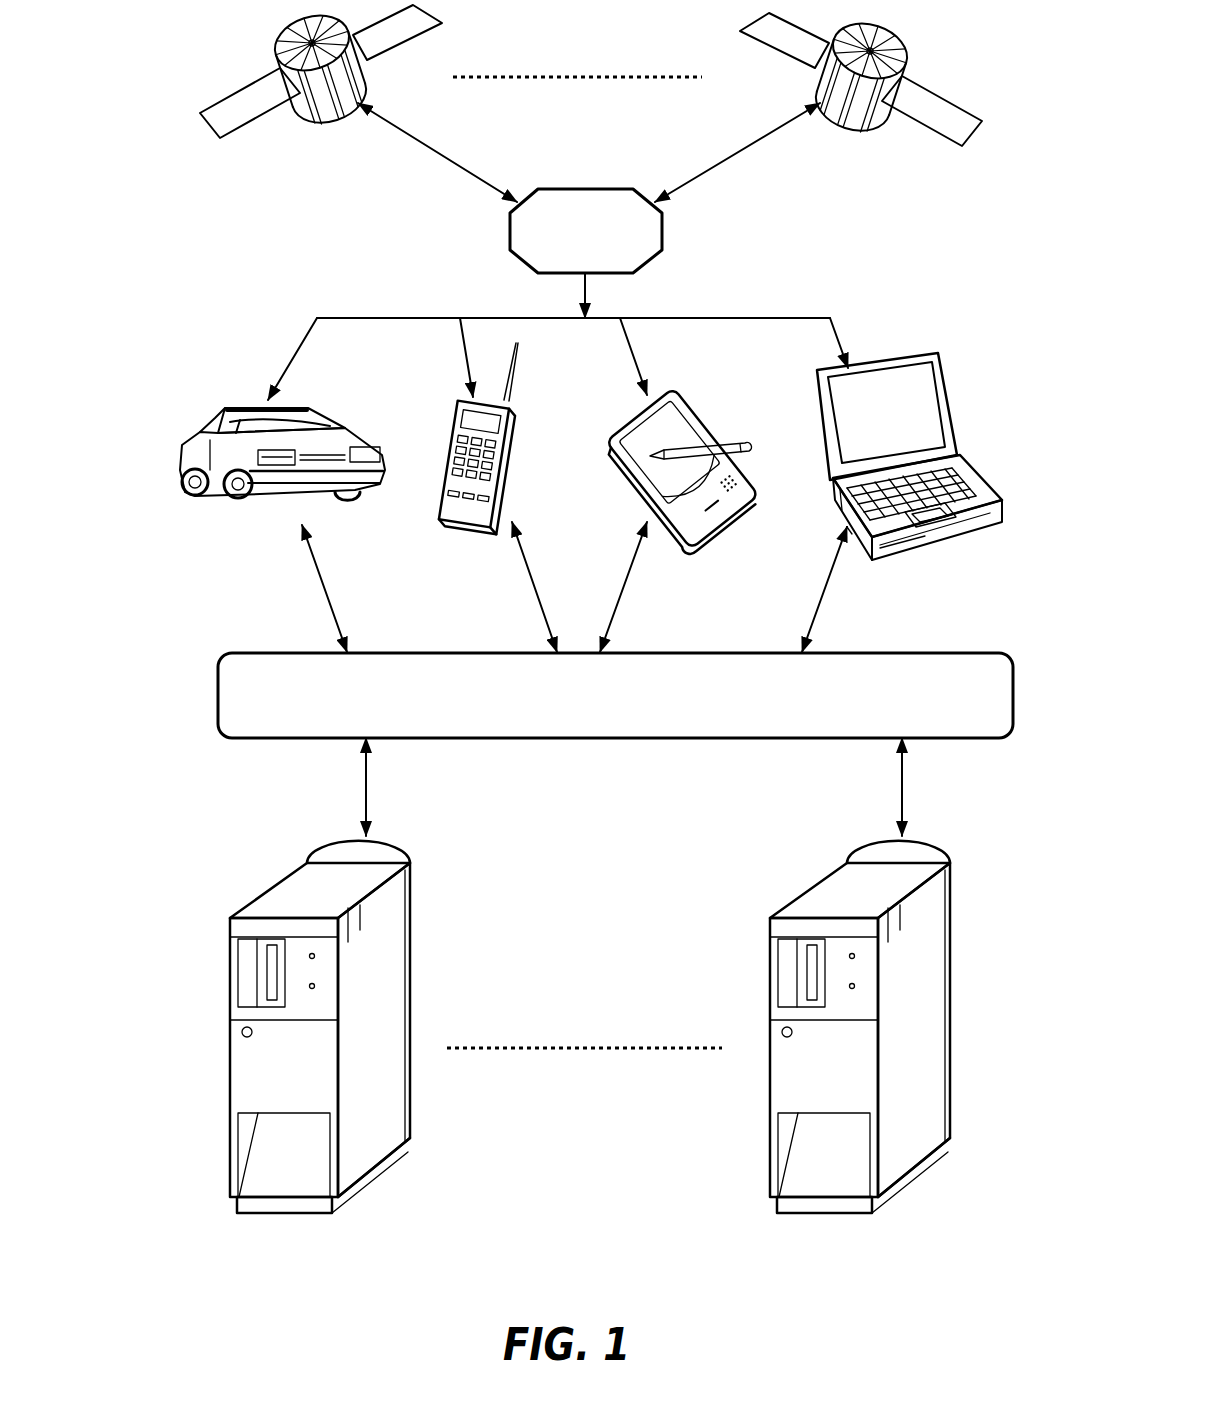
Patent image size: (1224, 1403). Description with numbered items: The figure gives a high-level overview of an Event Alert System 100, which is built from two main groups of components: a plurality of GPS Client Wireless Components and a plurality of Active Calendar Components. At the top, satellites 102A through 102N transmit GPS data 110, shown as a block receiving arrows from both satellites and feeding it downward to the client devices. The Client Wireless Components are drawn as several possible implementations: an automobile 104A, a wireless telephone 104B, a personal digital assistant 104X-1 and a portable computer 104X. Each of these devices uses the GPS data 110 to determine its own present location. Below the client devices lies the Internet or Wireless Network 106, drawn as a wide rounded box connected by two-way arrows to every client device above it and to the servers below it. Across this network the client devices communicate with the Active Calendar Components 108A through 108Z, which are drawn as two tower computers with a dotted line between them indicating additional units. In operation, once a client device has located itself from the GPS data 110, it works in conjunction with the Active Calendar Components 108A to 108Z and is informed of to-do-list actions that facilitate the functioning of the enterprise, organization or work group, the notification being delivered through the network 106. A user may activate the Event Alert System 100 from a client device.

The Event Alert System 100 is at (278, 262).
The satellite 102A is at (335, 112).
The satellite 102N is at (843, 117).
The GPS data 110 is at (598, 190).
The automobile 104A is at (278, 510).
The wireless telephone 104B is at (467, 531).
The personal digital assistant 104X-1 is at (707, 542).
The portable computer 104X is at (928, 538).
The Internet or Wireless Network 106 is at (635, 742).
The Active Calendar Component 108A is at (286, 1216).
The Active Calendar Component 108Z is at (826, 1216).